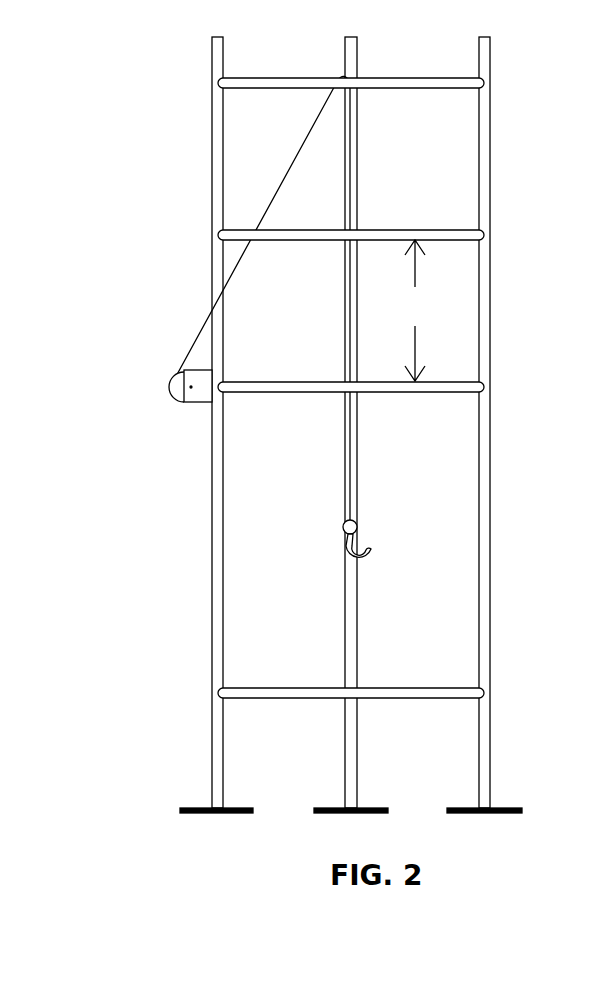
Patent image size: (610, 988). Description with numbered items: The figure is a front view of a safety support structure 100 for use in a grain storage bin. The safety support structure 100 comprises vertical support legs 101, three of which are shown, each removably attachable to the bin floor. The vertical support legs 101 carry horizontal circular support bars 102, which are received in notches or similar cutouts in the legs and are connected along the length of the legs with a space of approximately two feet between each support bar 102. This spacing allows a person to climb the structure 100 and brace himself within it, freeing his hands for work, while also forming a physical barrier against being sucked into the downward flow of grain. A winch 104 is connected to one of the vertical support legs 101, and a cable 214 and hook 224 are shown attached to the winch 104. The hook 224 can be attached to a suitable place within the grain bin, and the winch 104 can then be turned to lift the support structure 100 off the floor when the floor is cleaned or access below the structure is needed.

The safety support structure 100 is at (212, 138).
The vertical support legs 101 is at (350, 55).
The horizontal circular support bars 102 is at (277, 81).
The winch 104 is at (172, 387).
The cable 214 is at (195, 338).
The hook 224 is at (340, 553).